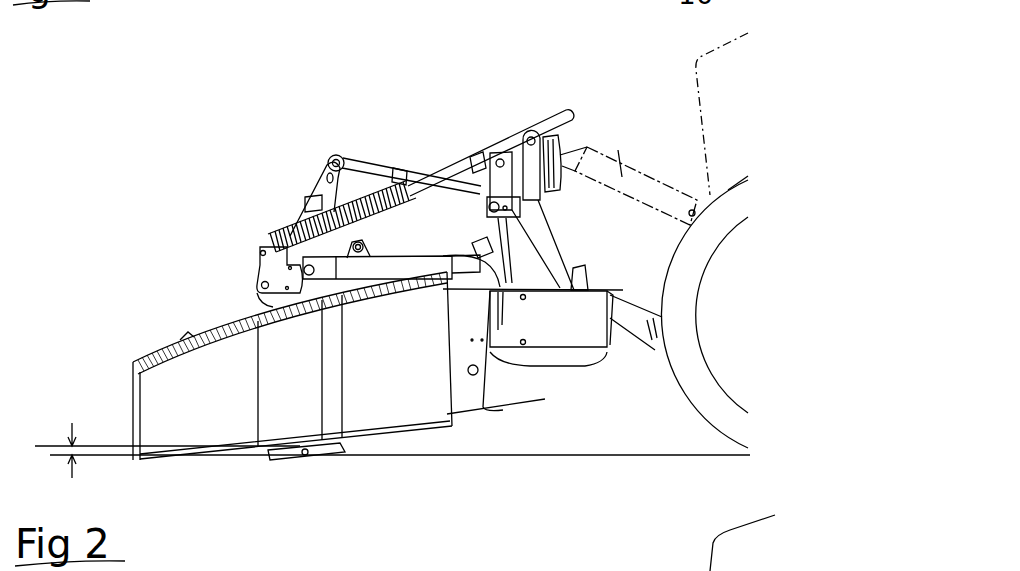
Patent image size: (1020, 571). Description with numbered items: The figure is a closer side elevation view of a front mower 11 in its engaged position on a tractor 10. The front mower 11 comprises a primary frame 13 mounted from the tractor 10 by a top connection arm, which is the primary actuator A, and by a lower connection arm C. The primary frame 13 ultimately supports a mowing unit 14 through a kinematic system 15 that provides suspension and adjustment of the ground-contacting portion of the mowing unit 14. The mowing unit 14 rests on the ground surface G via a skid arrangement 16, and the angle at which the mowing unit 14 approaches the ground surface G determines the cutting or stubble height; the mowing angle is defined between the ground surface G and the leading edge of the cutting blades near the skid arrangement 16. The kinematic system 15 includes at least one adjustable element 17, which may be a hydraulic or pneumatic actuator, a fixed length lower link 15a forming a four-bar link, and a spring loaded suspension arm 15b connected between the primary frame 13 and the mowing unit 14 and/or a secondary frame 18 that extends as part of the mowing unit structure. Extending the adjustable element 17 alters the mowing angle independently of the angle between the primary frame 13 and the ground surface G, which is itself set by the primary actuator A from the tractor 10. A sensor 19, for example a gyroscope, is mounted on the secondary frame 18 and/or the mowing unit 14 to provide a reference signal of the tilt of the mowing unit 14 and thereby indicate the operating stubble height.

The tractor 10 is at (735, 47).
The front mower 11 is at (293, 92).
The primary frame 13 is at (521, 105).
The mowing unit 14 is at (185, 397).
The kinematic system 15 is at (222, 242).
The fixed length lower link 15a is at (397, 263).
The spring loaded suspension arm 15b is at (275, 243).
The skid arrangement 16 is at (310, 453).
The adjustable element 17 is at (403, 170).
The secondary frame 18 is at (312, 182).
The sensor 19 is at (287, 230).
The primary actuator A is at (620, 172).
The lower connection arm C is at (629, 322).
The ground surface G is at (575, 457).